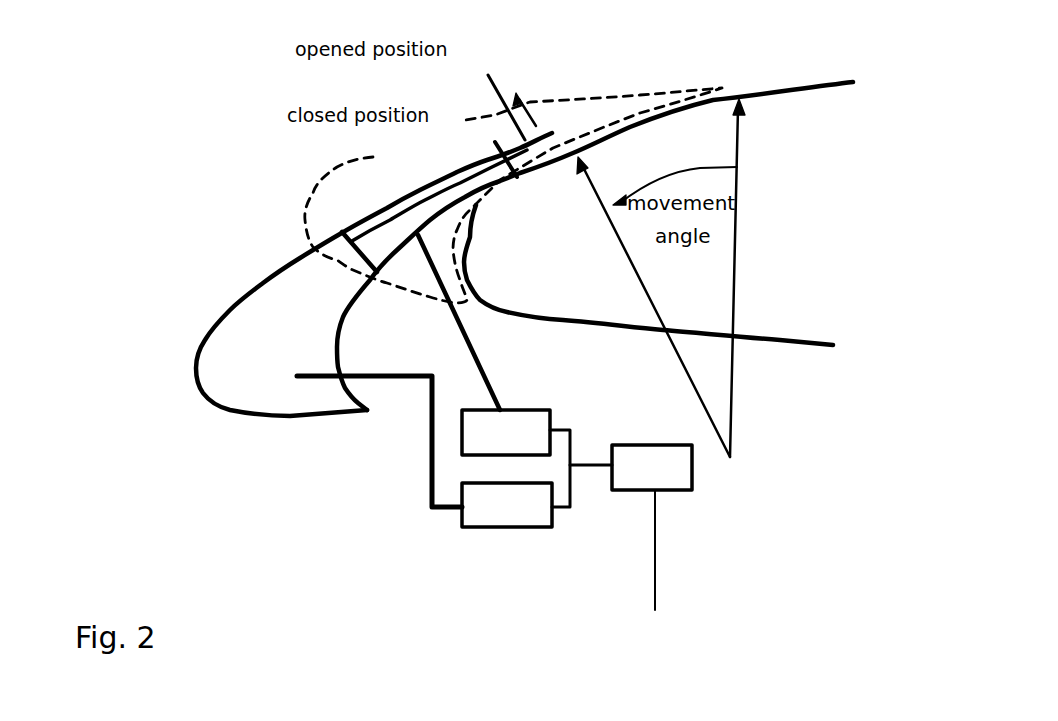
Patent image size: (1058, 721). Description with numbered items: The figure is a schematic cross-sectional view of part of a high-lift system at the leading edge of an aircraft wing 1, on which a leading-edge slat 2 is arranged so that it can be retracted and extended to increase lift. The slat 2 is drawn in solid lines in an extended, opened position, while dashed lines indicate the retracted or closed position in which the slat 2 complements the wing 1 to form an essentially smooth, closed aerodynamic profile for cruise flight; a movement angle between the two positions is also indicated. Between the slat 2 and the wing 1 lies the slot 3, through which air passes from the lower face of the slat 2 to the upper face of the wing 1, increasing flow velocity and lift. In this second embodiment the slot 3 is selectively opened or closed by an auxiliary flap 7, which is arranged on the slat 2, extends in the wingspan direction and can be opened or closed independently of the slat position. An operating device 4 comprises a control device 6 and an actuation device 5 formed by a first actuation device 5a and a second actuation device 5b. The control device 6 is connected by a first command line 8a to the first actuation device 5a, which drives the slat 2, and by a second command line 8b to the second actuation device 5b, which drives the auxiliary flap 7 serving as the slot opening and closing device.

The wing 1 is at (782, 273).
The leading-edge slat 2 is at (292, 337).
The slot 3 is at (575, 88).
The operating device 4 is at (538, 572).
The actuation device 5 is at (438, 490).
The first actuation device 5a is at (507, 505).
The second actuation device 5b is at (506, 432).
The control device 6 is at (652, 527).
The auxiliary flap 7 is at (407, 223).
The first command line 8a is at (428, 417).
The second command line 8b is at (478, 357).